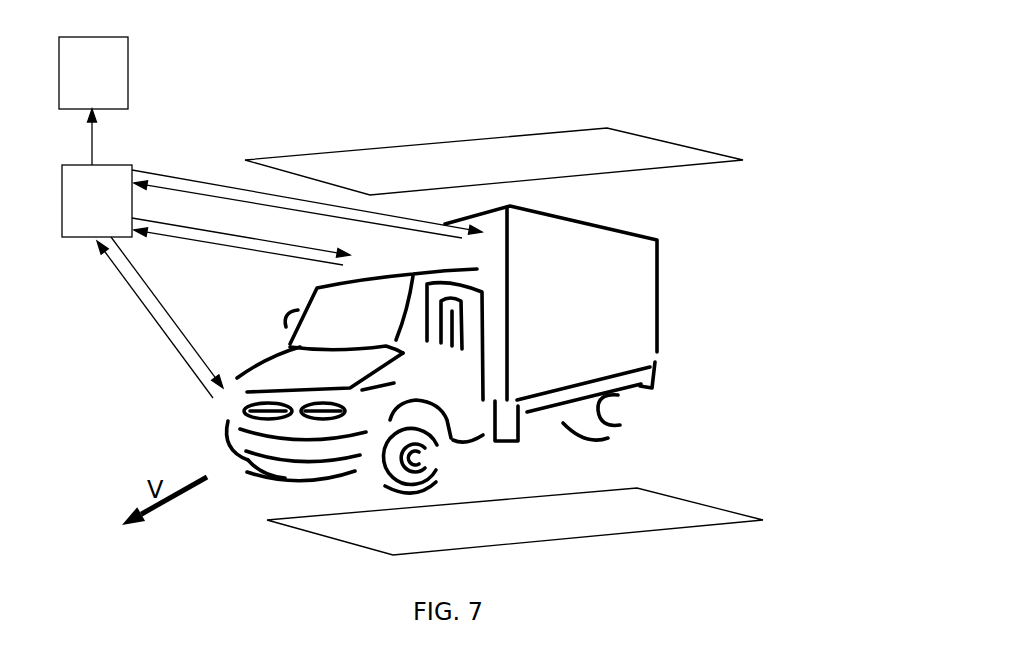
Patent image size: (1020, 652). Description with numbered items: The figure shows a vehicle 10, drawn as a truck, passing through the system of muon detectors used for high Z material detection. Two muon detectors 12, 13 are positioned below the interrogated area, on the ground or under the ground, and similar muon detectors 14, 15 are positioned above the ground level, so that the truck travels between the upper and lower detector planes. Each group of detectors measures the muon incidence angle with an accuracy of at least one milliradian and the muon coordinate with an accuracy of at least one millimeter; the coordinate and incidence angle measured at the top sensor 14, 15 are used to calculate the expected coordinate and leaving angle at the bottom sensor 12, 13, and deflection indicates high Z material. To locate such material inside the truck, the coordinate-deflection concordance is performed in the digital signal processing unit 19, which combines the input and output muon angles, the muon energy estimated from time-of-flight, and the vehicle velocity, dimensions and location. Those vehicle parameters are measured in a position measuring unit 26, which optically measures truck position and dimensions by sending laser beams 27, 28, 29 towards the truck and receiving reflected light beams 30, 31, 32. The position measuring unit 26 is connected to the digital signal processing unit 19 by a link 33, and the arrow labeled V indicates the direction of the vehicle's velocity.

The vehicle (truck) 10 is at (442, 349).
The muon detector 12 is at (515, 509).
The muon detector 13 is at (515, 509).
The muon detector 14 is at (494, 147).
The muon detector 15 is at (494, 147).
The digital signal processing unit 19 is at (93, 73).
The position measuring unit 26 is at (97, 201).
The laser beam 27 is at (155, 319).
The laser beam 28 is at (241, 236).
The laser beam 29 is at (307, 195).
The reflected light beam 30 is at (167, 312).
The reflected light beam 31 is at (298, 209).
The reflected light beam 32 is at (238, 251).
The signal connection 33 is at (106, 137).